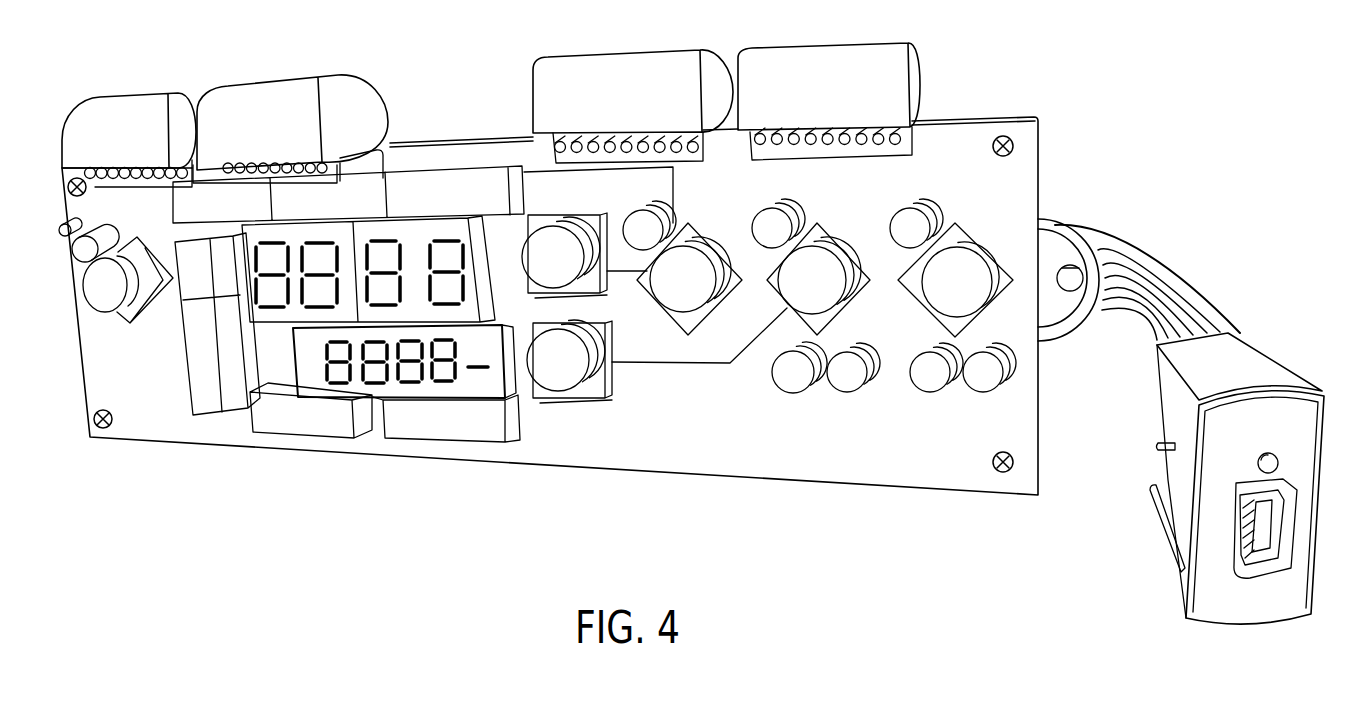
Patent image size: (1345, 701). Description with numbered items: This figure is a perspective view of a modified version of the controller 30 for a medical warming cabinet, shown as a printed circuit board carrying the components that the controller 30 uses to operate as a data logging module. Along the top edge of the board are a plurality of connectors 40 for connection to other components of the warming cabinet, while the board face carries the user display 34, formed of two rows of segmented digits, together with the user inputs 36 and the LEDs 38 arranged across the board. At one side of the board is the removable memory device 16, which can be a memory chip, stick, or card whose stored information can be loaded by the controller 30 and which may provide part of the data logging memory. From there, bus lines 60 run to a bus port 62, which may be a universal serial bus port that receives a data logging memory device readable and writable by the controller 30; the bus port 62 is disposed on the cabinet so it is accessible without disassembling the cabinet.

The removable memory device 16 is at (1055, 226).
The controller 30 is at (688, 448).
The user display 34 is at (468, 390).
The user inputs 36 is at (970, 296).
The LEDs 38 is at (932, 377).
The connectors 40 is at (837, 98).
The bus lines 60 is at (1137, 257).
The bus port 62 is at (1257, 618).